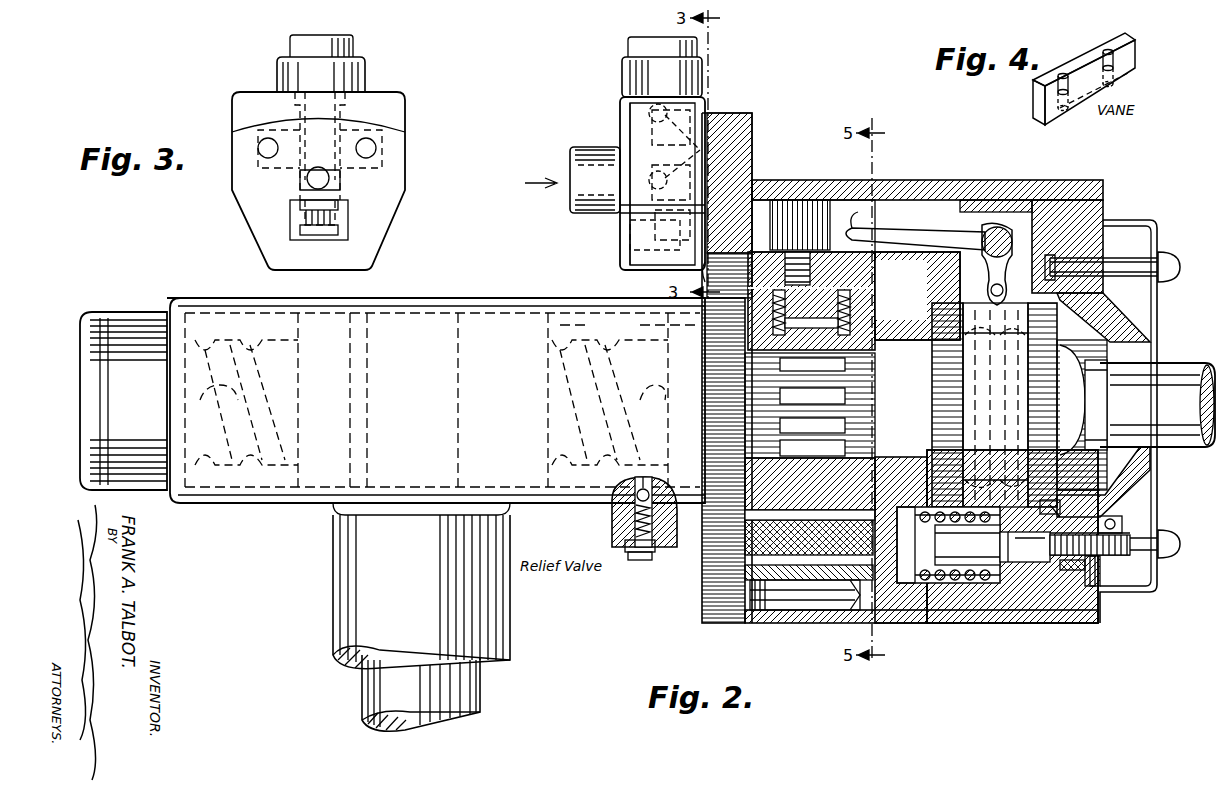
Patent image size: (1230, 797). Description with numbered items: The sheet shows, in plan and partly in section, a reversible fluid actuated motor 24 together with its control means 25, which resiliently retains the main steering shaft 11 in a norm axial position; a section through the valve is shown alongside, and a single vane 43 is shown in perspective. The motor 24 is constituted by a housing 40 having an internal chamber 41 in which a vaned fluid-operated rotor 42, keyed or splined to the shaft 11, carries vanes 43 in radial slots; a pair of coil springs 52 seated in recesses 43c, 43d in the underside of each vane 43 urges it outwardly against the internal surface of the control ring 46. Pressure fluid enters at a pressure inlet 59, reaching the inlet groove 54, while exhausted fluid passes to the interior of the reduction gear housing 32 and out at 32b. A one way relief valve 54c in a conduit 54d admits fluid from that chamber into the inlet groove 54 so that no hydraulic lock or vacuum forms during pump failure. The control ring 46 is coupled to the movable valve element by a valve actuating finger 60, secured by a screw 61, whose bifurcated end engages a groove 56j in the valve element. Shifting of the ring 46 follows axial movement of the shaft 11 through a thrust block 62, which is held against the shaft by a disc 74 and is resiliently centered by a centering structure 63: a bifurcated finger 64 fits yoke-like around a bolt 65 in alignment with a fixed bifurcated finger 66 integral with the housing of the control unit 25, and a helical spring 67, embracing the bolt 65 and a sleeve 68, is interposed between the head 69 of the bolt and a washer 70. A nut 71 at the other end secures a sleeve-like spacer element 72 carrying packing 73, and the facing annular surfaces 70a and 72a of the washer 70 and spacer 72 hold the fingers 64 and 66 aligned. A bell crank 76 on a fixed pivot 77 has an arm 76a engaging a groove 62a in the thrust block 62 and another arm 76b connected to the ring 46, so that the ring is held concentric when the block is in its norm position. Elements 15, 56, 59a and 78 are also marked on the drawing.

In FIG. 2, the main steering shaft 11 is at (1165, 365).
In FIG. 2, the cover 15 is at (1100, 316).
In FIG. 2, the reversible fluid actuated motor 24 is at (812, 180).
In FIG. 2, the control means 25 is at (1062, 165).
In FIG. 2, the reduction gear housing 32 is at (540, 300).
In FIG. 2, the exhaust conduit connection 32b is at (626, 335).
In FIG. 2, the housing 40 is at (740, 623).
In FIG. 2, the internal chamber 41 is at (760, 598).
In FIG. 2, the vaned fluid-operated rotor 42 is at (855, 465).
In FIG. 4, the vane 43 is at (1130, 50).
In FIG. 4, the recess 43c is at (1066, 105).
In FIG. 4, the recess 43d is at (1118, 82).
In FIG. 2, the control ring 46 is at (760, 572).
In FIG. 2, the coil spring 52 is at (757, 350).
In FIG. 2, the inlet groove 54 is at (700, 552).
In FIG. 2, the one way relief valve 54c is at (612, 508).
In FIG. 2, the conduit 54d is at (655, 475).
In FIG. 2, the valve body 56 is at (623, 141).
In FIG. 3, the groove 56j is at (338, 220).
In FIG. 2, the pressure inlet 59 is at (570, 165).
In FIG. 2, the inlet passage 59a is at (630, 235).
In FIG. 2, the valve actuating finger 60 is at (705, 282).
In FIG. 2, the screw 61 is at (781, 200).
In FIG. 2, the thrust block 62 is at (1103, 297).
In FIG. 2, the groove 62a is at (1057, 322).
In FIG. 2, the centering structure 63 is at (955, 583).
In FIG. 2, the bifurcated finger 64 is at (1122, 520).
In FIG. 2, the bolt 65 is at (1050, 560).
In FIG. 2, the fixed bifurcated finger 66 is at (1020, 565).
In FIG. 2, the helical spring 67 is at (922, 583).
In FIG. 2, the sleeve 68 is at (938, 583).
In FIG. 2, the head 69 is at (905, 583).
In FIG. 2, the washer 70 is at (995, 408).
In FIG. 2, the annular surface 70a is at (967, 545).
In FIG. 2, the nut 71 is at (1105, 590).
In FIG. 2, the sleeve-like spacer element 72 is at (1092, 586).
In FIG. 2, the annular surface 72a is at (1070, 510).
In FIG. 2, the packing or sealing means 73 is at (1070, 570).
In FIG. 2, the disc 74 is at (945, 385).
In FIG. 2, the bell crank 76 is at (928, 228).
In FIG. 2, the arm 76a is at (974, 264).
In FIG. 2, the arm 76b is at (882, 233).
In FIG. 2, the fixed pivot 77 is at (997, 235).
In FIG. 3, the passage 78 is at (330, 178).